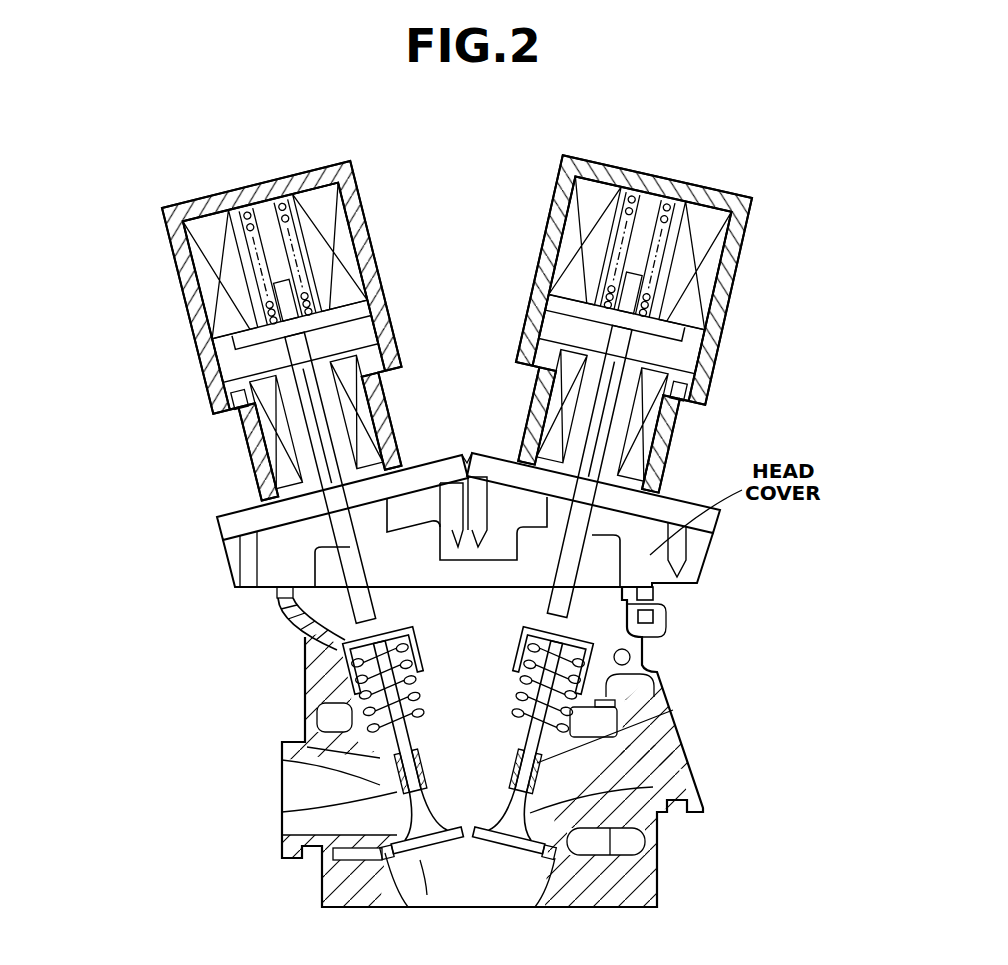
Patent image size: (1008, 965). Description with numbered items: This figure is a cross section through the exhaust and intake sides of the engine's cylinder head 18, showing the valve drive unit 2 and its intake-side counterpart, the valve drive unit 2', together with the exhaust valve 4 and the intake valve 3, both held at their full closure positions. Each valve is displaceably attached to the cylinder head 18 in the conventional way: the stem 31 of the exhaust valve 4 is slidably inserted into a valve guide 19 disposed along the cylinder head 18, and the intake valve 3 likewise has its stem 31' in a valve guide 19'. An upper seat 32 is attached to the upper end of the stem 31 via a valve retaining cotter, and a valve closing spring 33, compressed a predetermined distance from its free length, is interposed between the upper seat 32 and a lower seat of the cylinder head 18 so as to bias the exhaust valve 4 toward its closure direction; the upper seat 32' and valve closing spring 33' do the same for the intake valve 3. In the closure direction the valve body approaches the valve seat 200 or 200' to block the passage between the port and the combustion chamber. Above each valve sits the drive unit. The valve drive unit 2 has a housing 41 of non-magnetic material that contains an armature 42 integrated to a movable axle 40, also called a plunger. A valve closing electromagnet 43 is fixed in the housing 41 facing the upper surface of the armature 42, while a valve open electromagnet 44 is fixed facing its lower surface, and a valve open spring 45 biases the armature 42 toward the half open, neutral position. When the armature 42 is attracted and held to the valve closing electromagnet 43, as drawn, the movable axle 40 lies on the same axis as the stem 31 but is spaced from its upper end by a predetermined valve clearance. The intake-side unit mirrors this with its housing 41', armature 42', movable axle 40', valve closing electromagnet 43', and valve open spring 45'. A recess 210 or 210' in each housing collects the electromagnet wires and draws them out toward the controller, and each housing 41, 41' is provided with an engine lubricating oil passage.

The valve drive unit 2 is at (293, 390).
The valve drive unit 2' is at (618, 386).
The intake valve 3 is at (510, 860).
The exhaust valve 4 is at (432, 865).
The cylinder head 18 is at (673, 708).
The valve guide 19 is at (311, 771).
The valve guide 19' is at (635, 771).
The stem 31 is at (336, 817).
The stem 31' is at (601, 817).
The upper seat 32 is at (320, 680).
The upper seat 32' is at (615, 680).
The valve closing spring 33 is at (273, 729).
The valve closing spring 33' is at (663, 727).
The movable axle 40 is at (269, 618).
The movable axle 40' is at (684, 612).
The housing 41 is at (307, 334).
The housing 41' is at (683, 326).
The armature 42 is at (236, 341).
The armature 42' is at (679, 334).
The valve closing electromagnet 43 is at (222, 261).
The valve closing electromagnet 43' is at (599, 242).
The valve open electromagnet 44 is at (268, 448).
The valve open spring 45 is at (277, 222).
The valve open spring 45' is at (637, 214).
The valve seat 200 is at (342, 901).
The valve seat 200' is at (599, 900).
The recess 210 is at (166, 384).
The recess 210' is at (560, 343).